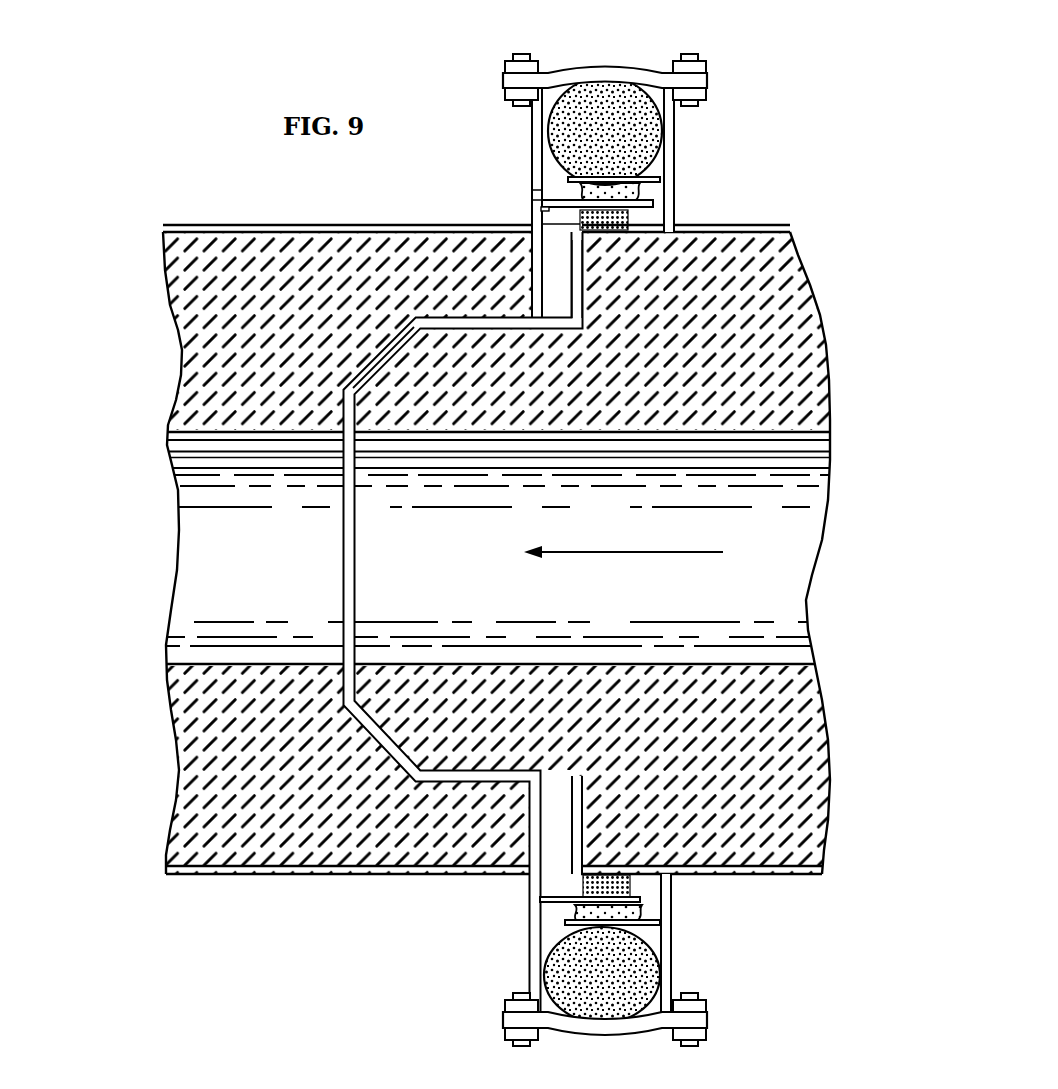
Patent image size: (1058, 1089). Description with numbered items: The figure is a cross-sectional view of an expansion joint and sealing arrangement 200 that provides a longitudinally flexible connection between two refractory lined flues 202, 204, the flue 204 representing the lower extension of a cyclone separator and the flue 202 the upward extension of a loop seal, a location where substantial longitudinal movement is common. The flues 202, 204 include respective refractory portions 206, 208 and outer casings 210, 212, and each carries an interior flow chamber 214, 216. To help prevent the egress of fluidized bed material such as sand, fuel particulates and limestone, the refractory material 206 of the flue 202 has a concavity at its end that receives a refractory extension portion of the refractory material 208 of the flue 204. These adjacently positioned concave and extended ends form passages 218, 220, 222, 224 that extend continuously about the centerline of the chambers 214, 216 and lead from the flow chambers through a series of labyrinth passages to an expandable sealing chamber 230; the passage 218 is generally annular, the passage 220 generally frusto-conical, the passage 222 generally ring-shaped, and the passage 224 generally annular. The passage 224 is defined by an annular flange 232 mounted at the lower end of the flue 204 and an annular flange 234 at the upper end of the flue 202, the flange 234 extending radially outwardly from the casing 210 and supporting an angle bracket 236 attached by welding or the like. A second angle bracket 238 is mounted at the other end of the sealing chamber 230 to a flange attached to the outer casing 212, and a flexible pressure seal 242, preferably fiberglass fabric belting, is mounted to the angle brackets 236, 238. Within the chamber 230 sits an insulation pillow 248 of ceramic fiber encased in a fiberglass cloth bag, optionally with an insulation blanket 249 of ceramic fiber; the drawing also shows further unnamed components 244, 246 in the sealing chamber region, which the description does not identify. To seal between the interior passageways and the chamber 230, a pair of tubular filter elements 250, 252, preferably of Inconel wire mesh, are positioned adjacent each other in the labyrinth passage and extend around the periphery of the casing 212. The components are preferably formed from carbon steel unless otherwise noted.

The expansion joint and sealing arrangement 200 is at (804, 100).
The refractory lined flue 202 is at (140, 297).
The refractory lined flue 204 is at (838, 300).
The refractory portion 206 is at (165, 250).
The refractory portion 208 is at (800, 263).
The outer casing 210 is at (222, 225).
The outer casing 212 is at (768, 230).
The interior flow chamber 214 is at (185, 495).
The interior flow chamber 216 is at (808, 522).
The passage 218 is at (360, 400).
The passage 220 is at (407, 348).
The passage 222 is at (505, 331).
The passage 224 is at (571, 313).
The expandable sealing chamber 230 is at (660, 205).
The annular flange 232 is at (588, 268).
The annular flange 234 is at (540, 214).
The angle bracket 236 is at (536, 108).
The second angle bracket 238 is at (708, 84).
The flexible pressure seal 242 is at (568, 73).
The support member 244 is at (540, 198).
The gasket 246 is at (660, 190).
The insulation pillow 248 is at (632, 76).
The insulation blanket 249 is at (661, 178).
The tubular filter element 250 is at (630, 218).
The tubular filter element 252 is at (580, 223).